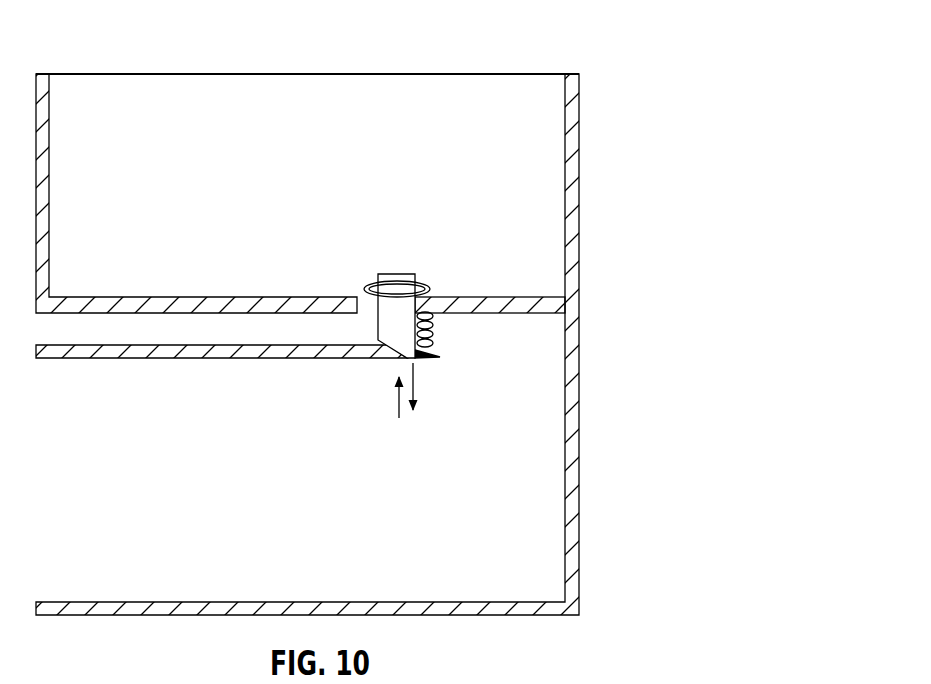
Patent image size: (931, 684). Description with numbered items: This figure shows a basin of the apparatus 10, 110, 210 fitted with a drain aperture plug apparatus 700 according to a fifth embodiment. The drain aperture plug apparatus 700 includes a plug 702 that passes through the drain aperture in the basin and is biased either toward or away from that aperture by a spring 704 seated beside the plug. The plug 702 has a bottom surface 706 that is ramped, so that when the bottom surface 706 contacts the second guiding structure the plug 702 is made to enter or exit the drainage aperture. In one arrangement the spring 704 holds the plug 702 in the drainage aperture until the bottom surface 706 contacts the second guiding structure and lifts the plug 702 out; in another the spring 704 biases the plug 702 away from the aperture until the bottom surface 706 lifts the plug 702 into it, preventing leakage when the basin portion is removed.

The enclosure / housing 10 is at (411, 314).
The enclosure / housing 110 is at (411, 314).
The enclosure / housing 210 is at (605, 50).
The drain aperture plug apparatus 700 is at (356, 288).
The plug 702 is at (395, 280).
The spring 704 is at (433, 330).
The bottom surface 706 is at (400, 363).